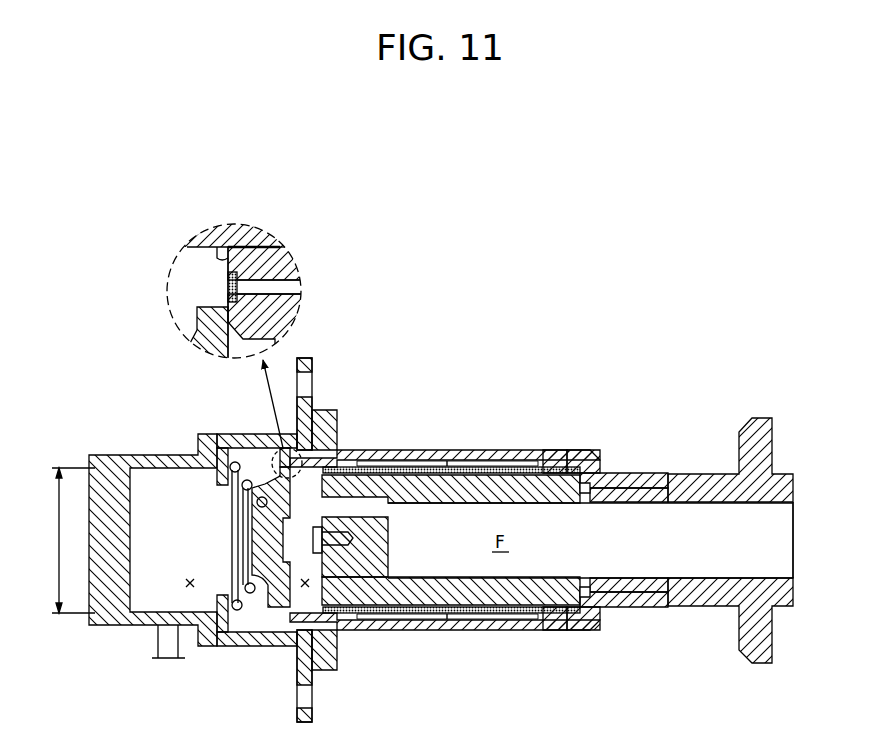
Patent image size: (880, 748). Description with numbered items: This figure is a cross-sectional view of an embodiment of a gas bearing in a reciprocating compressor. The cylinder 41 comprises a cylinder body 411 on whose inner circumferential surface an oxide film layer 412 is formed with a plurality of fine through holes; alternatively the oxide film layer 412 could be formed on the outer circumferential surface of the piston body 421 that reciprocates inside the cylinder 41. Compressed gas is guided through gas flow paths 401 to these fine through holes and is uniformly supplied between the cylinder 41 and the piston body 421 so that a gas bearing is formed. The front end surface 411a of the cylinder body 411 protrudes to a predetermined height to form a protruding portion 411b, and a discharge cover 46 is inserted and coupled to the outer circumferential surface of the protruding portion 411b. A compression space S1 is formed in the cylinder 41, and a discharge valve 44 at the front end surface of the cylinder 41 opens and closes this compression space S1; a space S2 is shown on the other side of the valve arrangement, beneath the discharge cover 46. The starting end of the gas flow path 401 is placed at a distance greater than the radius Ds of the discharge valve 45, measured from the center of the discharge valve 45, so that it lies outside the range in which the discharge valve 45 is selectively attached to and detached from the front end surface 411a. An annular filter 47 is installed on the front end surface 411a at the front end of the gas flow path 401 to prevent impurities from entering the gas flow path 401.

The discharge cover 46 is at (150, 455).
The gas flow path 401 is at (420, 460).
The annular filter 47 is at (228, 287).
The cylinder 41 is at (566, 485).
The cylinder body 411 is at (555, 462).
The oxide film layer 412 is at (583, 462).
The front end surface 411a is at (217, 253).
The protruding portion 411b is at (292, 258).
The piston body 421 is at (650, 478).
The discharge valve 44 is at (270, 590).
The discharge valve 45 is at (238, 610).
The compression space S1 is at (307, 590).
The second space S2 is at (192, 590).
The radius of the discharge valve Ds is at (64, 540).